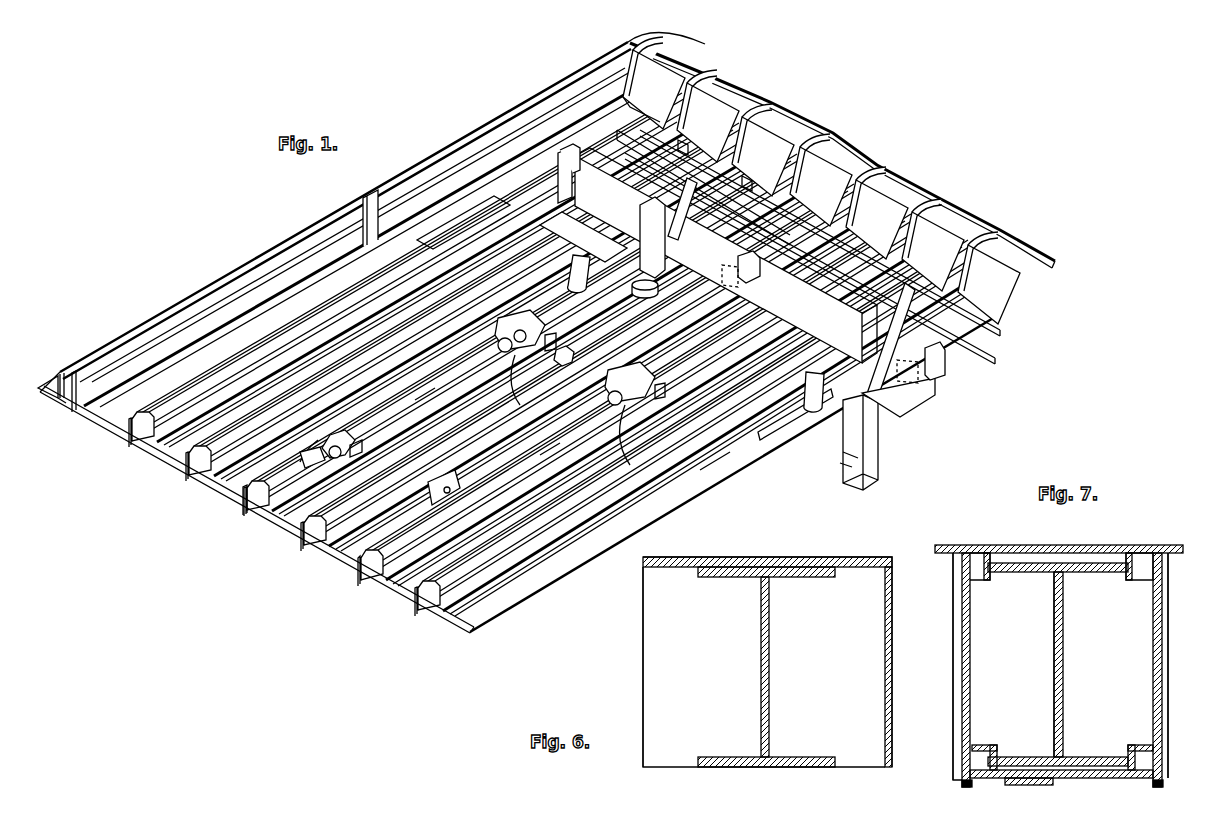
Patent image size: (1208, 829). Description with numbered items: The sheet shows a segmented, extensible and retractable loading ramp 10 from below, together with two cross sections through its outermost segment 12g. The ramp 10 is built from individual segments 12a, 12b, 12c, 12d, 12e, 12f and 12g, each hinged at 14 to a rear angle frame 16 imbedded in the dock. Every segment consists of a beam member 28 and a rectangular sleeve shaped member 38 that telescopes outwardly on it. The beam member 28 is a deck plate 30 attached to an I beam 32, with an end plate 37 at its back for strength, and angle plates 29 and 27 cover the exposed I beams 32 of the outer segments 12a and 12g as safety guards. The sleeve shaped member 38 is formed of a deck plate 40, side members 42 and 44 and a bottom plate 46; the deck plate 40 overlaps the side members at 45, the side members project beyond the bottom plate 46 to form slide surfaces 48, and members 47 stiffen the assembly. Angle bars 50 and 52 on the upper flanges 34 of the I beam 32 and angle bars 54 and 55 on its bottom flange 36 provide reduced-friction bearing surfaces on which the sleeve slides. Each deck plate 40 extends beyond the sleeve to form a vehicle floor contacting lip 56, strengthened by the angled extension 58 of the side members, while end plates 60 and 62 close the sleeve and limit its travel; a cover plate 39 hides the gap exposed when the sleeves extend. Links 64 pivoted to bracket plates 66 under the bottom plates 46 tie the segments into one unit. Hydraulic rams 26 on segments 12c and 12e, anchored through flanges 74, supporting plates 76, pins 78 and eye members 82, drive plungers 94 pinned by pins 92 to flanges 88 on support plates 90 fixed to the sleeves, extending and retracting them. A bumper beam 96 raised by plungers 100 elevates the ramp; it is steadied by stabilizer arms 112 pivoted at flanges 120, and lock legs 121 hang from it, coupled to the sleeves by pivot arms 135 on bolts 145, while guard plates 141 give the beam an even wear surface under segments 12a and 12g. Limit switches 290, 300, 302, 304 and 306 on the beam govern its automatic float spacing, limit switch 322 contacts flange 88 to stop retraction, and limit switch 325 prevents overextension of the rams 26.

In FIG. 1, the loading ramp 10 is at (500, 101).
In FIG. 1, the ramp segment 12a is at (690, 58).
In FIG. 1, the ramp segment 12b is at (750, 85).
In FIG. 1, the ramp segment 12c is at (800, 116).
In FIG. 1, the ramp segment 12d is at (855, 148).
In FIG. 1, the ramp segment 12e is at (910, 178).
In FIG. 1, the ramp segment 12f is at (965, 207).
In FIG. 1, the ramp segment 12g is at (1028, 242).
In FIG. 6, the ramp segment 12g is at (718, 672).
In FIG. 7, the ramp segment 12g is at (1118, 666).
In FIG. 1, the hinge 14 is at (62, 372).
In FIG. 1, the rear angle frame 16 is at (50, 383).
In FIG. 1, the ram 26 is at (418, 398).
In FIG. 1, the angle plate 27 is at (532, 584).
In FIG. 6, the angle plate 27 is at (884, 608).
In FIG. 1, the beam member 28 is at (132, 353).
In FIG. 6, the beam member 28 is at (857, 546).
In FIG. 1, the angle plate 29 is at (183, 322).
In FIG. 6, the deck plate 30 is at (768, 558).
In FIG. 1, the I beam 32 is at (248, 508).
In FIG. 6, the I beam 32 is at (770, 643).
In FIG. 7, the I beam 32 is at (1064, 617).
In FIG. 6, the flange 34 is at (732, 570).
In FIG. 7, the flange 34 is at (1040, 572).
In FIG. 1, the bottom flange 36 is at (168, 465).
In FIG. 6, the bottom flange 36 is at (798, 757).
In FIG. 7, the bottom flange 36 is at (1036, 757).
In FIG. 1, the end plate 37 is at (66, 404).
In FIG. 6, the end plate 37 is at (650, 700).
In FIG. 1, the sleeve shaped member 38 is at (463, 153).
In FIG. 7, the sleeve shaped member 38 is at (1107, 534).
In FIG. 1, the cover plate 39 is at (245, 272).
In FIG. 1, the deck plate 40 is at (520, 110).
In FIG. 7, the deck plate 40 is at (1057, 546).
In FIG. 7, the side member 42 is at (1162, 618).
In FIG. 7, the side member 44 is at (963, 623).
In FIG. 7, the overlap 45 is at (1170, 556).
In FIG. 7, the bottom plate 46 is at (1087, 778).
In FIG. 1, the strengthening member 47 is at (366, 196).
In FIG. 7, the strengthening member 47 is at (955, 698).
In FIG. 7, the slide surface 48 is at (970, 786).
In FIG. 7, the angle bar 50 is at (988, 580).
In FIG. 7, the angle bar 52 is at (1134, 560).
In FIG. 7, the angle bar 54 is at (982, 745).
In FIG. 7, the angle bar 55 is at (1136, 745).
In FIG. 1, the lip 56 is at (665, 36).
In FIG. 1, the angled side member extension 58 is at (622, 60).
In FIG. 1, the end plate 60 is at (625, 80).
In FIG. 1, the end plate 62 is at (620, 99).
In FIG. 1, the link 64 is at (684, 140).
In FIG. 1, the bracket plate 66 is at (805, 212).
In FIG. 1, the flange 74 is at (318, 462).
In FIG. 1, the supporting plate 76 is at (305, 440).
In FIG. 1, the pin 78 is at (340, 457).
In FIG. 1, the eye member 82 is at (363, 448).
In FIG. 1, the flange 88 is at (525, 316).
In FIG. 1, the support plate 90 is at (632, 366).
In FIG. 1, the pin 92 is at (535, 298).
In FIG. 1, the plunger 94 is at (518, 368).
In FIG. 1, the bumper beam 96 is at (915, 408).
In FIG. 1, the plunger 100 is at (578, 262).
In FIG. 1, the stabilizer arm 112 is at (585, 226).
In FIG. 1, the flange 120 is at (716, 478).
In FIG. 1, the lock leg 121 is at (880, 468).
In FIG. 1, the pivot arm 135 is at (880, 435).
In FIG. 1, the guard plate 141 is at (490, 205).
In FIG. 7, the guard plate 141 is at (1030, 785).
In FIG. 1, the projecting bolt 145 is at (845, 460).
In FIG. 1, the limit switch 290 is at (752, 280).
In FIG. 1, the limit switch 300 is at (556, 175).
In FIG. 1, the limit switch 302 is at (922, 383).
In FIG. 1, the limit switch 304 is at (565, 148).
In FIG. 1, the limit switch 306 is at (948, 365).
In FIG. 1, the limit switch 322 is at (724, 270).
In FIG. 1, the limit switch 325 is at (579, 354).